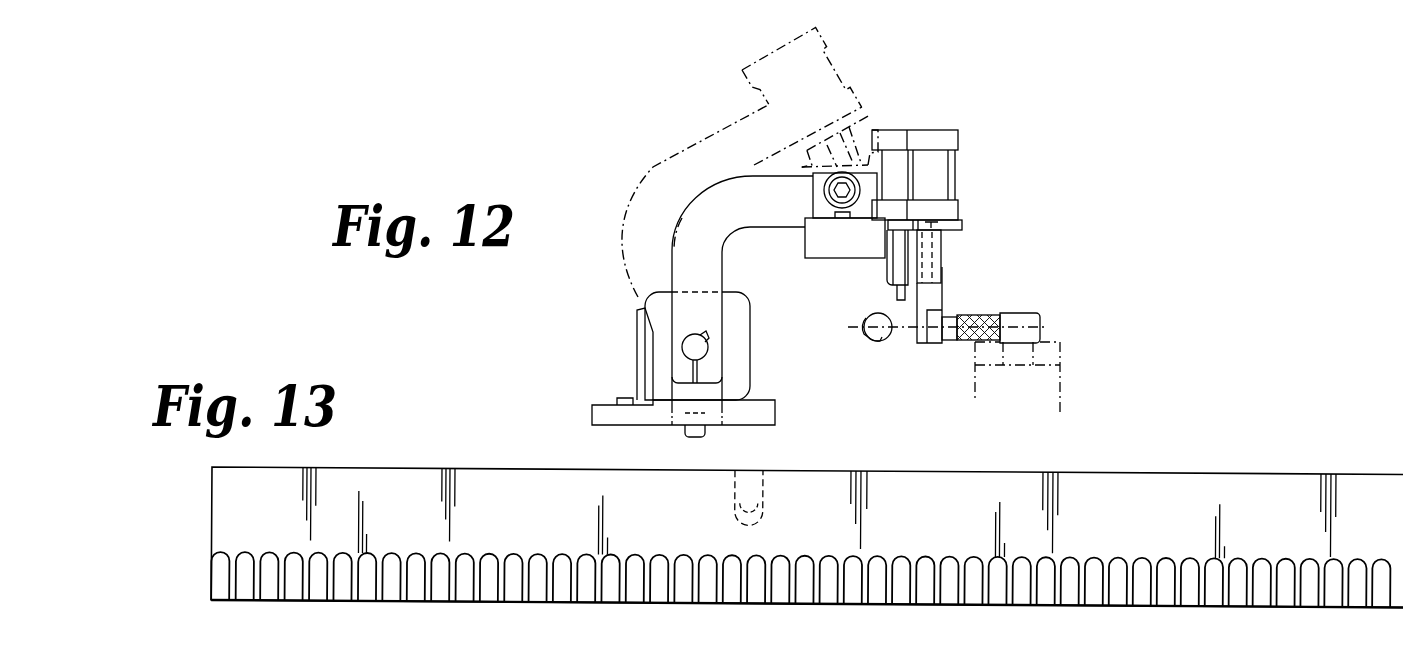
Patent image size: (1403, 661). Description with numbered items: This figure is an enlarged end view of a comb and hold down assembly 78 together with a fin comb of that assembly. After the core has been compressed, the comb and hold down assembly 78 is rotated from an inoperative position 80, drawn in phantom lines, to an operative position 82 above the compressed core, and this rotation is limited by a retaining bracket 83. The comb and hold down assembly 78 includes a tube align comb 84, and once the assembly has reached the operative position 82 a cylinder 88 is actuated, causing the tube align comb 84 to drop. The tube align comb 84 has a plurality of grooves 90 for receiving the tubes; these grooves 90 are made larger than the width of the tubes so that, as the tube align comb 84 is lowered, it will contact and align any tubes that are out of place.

In FIG. 12, the comb and hold down assembly 78 is at (630, 186).
In FIG. 12, the inoperative position 80 is at (717, 132).
In FIG. 12, the operative position 82 is at (735, 242).
In FIG. 12, the retaining bracket 83 is at (637, 321).
In FIG. 13, the tube align comb 84 is at (807, 519).
In FIG. 12, the cylinder 88 is at (920, 130).
In FIG. 13, the grooves 90 is at (386, 600).